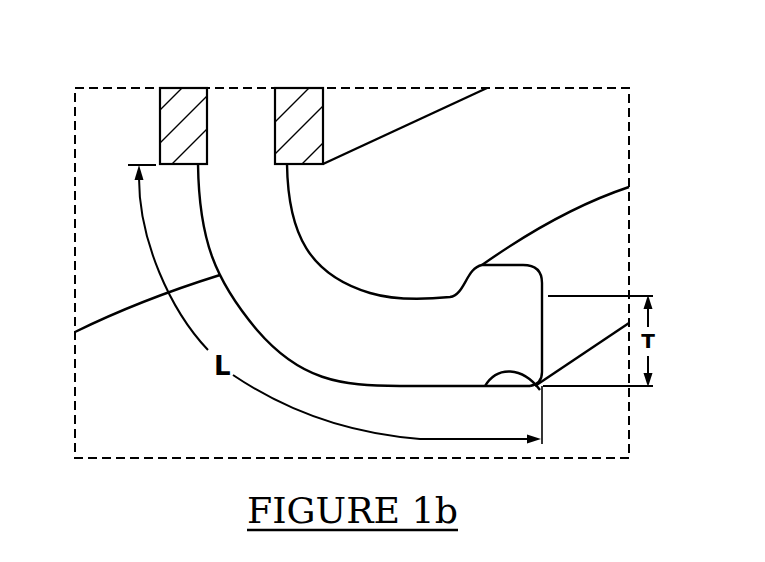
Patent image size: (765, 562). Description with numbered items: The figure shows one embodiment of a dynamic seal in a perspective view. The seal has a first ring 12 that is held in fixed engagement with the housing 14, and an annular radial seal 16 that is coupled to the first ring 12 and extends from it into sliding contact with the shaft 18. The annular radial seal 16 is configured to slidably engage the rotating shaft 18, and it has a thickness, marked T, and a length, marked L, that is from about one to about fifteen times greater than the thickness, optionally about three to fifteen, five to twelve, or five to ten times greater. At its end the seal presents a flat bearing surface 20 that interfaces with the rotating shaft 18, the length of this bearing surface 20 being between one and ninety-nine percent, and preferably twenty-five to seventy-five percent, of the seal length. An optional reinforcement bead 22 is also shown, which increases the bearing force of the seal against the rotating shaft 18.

The first ring 12 is at (237, 122).
The housing 14 is at (308, 110).
The annular radial seal 16 is at (310, 300).
The shaft 18 is at (117, 345).
The flat bearing surface 20 is at (540, 390).
The reinforcement bead 22 is at (528, 285).